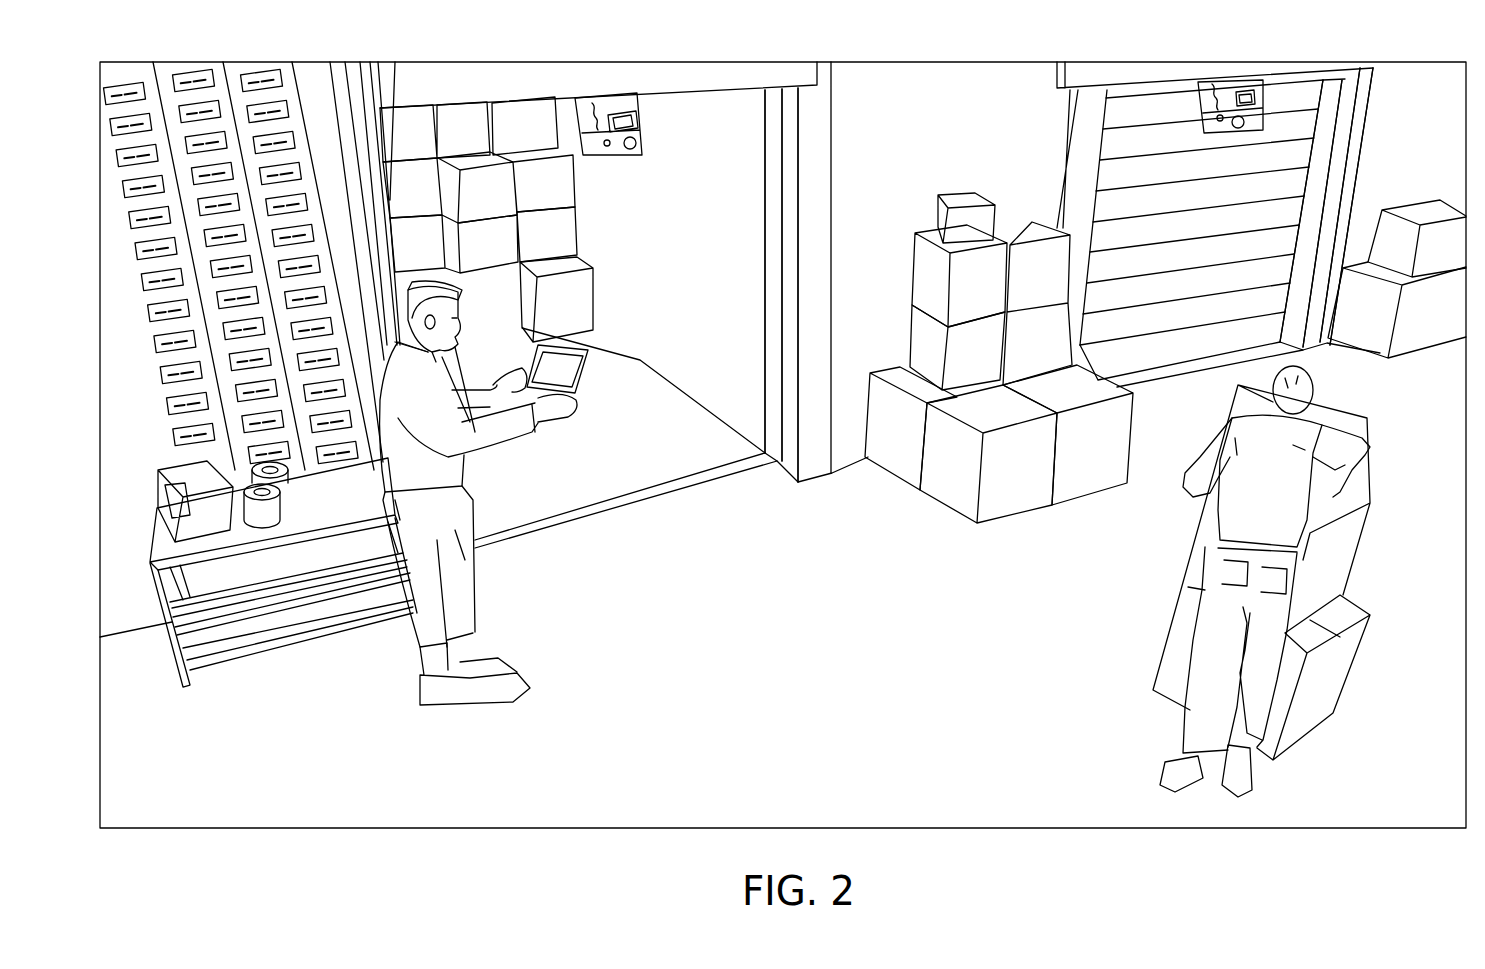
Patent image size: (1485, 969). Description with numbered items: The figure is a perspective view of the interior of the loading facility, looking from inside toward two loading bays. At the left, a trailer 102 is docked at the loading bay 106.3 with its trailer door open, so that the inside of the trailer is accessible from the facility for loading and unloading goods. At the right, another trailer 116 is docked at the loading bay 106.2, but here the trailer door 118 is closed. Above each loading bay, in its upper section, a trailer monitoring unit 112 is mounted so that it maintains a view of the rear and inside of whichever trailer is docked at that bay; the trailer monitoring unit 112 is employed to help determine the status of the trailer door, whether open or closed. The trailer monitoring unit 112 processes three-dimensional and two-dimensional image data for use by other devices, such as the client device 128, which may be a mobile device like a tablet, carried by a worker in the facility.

The trailer 102 is at (645, 472).
The loading bay 106.2 is at (1287, 328).
The loading bay 106.3 is at (790, 388).
The trailer monitoring unit (TMU) 112 is at (640, 135).
The trailer 116 is at (1198, 207).
The closed trailer door 118 is at (1297, 147).
The client device 128 is at (557, 363).